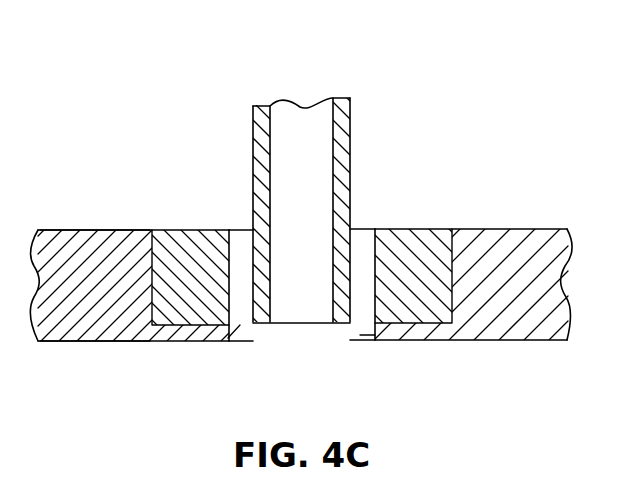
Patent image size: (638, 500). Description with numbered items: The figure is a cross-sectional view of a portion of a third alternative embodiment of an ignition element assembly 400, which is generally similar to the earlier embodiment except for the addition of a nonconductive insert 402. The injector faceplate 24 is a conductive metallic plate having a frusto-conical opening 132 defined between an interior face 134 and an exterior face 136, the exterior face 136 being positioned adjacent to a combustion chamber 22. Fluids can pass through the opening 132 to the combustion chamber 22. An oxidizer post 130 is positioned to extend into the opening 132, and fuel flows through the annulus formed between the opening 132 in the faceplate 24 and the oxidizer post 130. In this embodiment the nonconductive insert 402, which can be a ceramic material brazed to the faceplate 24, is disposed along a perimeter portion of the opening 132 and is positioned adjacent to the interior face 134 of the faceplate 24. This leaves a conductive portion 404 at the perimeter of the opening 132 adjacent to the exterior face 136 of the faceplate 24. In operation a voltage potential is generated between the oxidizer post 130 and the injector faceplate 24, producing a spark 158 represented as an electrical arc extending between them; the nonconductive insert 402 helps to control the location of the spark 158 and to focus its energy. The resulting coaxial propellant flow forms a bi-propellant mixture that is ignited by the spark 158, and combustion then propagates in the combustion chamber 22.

The ignition element assembly 400 is at (197, 70).
The oxidizer post 130 is at (344, 96).
The frusto-conical opening 132 is at (365, 228).
The interior face 134 is at (108, 230).
The exterior face 136 is at (78, 342).
The combustion chamber 22 is at (183, 365).
The injector faceplate 24 is at (514, 333).
The spark 158 is at (240, 343).
The nonconductive insert 402 is at (420, 228).
The conductive portion 404 is at (374, 335).